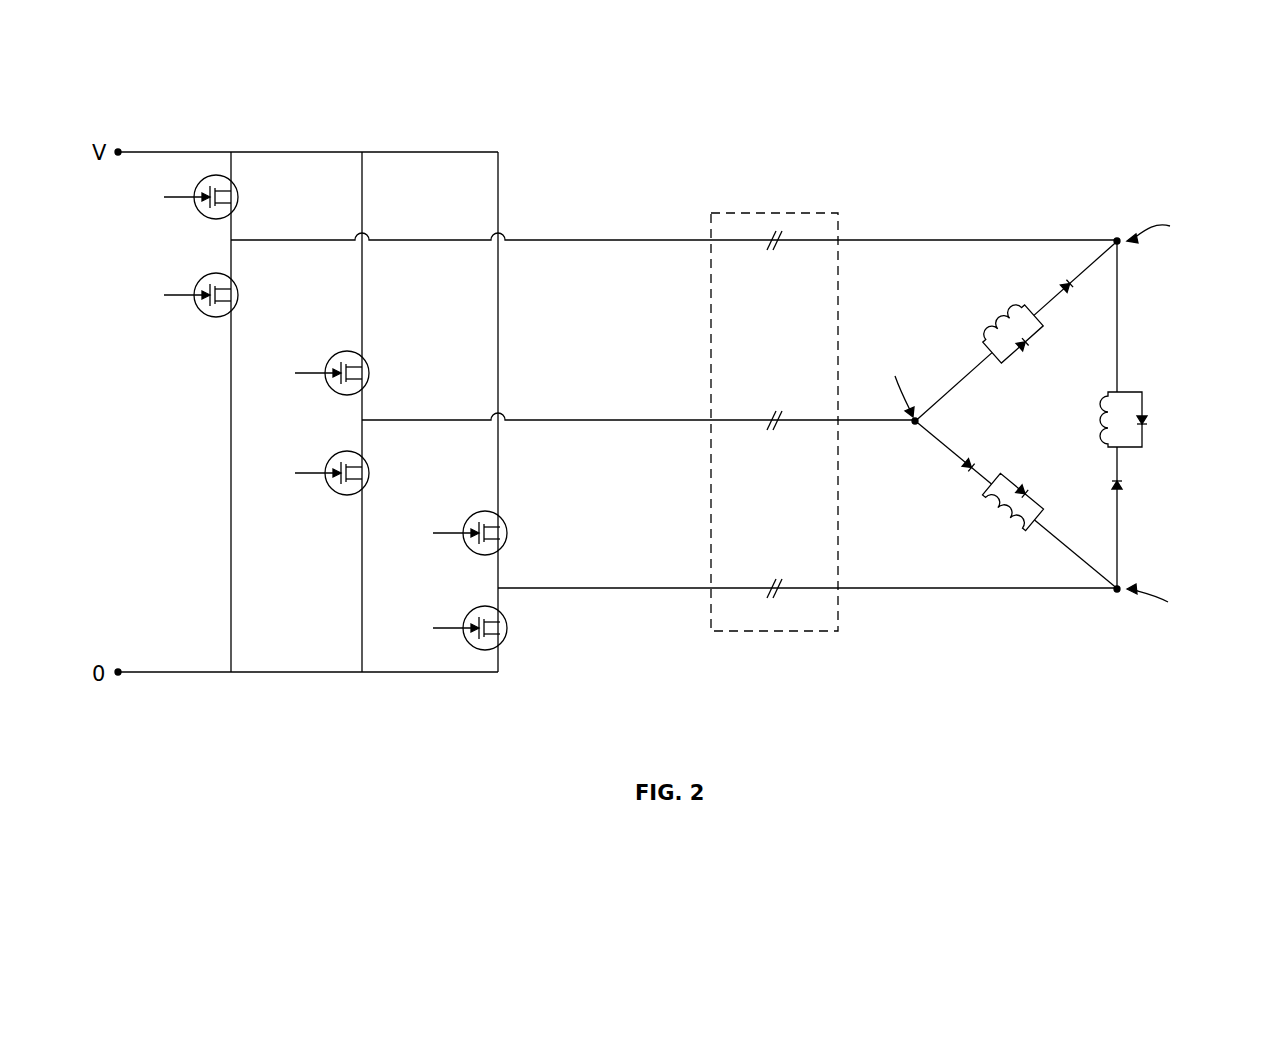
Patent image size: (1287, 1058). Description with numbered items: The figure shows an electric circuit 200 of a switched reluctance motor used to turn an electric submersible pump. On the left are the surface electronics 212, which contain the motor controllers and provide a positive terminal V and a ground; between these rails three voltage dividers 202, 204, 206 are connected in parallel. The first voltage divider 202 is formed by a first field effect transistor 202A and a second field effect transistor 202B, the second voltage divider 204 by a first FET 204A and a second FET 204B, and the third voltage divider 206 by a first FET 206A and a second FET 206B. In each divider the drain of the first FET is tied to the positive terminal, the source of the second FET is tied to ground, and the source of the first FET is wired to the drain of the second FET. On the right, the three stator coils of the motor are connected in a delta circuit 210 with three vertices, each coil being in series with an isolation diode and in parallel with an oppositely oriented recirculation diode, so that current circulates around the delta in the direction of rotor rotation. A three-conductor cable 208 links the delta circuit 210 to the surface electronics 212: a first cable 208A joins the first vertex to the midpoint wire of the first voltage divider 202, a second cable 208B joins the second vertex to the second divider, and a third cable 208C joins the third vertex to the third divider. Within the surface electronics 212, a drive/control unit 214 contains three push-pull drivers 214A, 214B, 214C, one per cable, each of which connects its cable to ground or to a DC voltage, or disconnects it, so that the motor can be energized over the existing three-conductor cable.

The electric circuit 200 is at (986, 134).
The first voltage divider 202 is at (498, 331).
The first field effect transistor 202A is at (207, 217).
The second field effect transistor 202B is at (209, 314).
The second voltage divider 204 is at (230, 471).
The first field effect transistor 204A is at (340, 391).
The second field effect transistor 204B is at (340, 491).
The third voltage divider 206 is at (362, 612).
The first field effect transistor 206A is at (476, 513).
The second field effect transistor 206B is at (476, 649).
The three-conductor cable 208 is at (646, 188).
The first cable 208A is at (630, 590).
The second cable 208B is at (630, 242).
The third cable 208C is at (630, 422).
The delta circuit 210 is at (1136, 323).
The surface electronics 212 is at (444, 101).
The drive/control unit 214 is at (793, 213).
The push-pull driver 214A is at (771, 615).
The push-pull driver 214B is at (771, 270).
The push-pull driver 214C is at (771, 448).